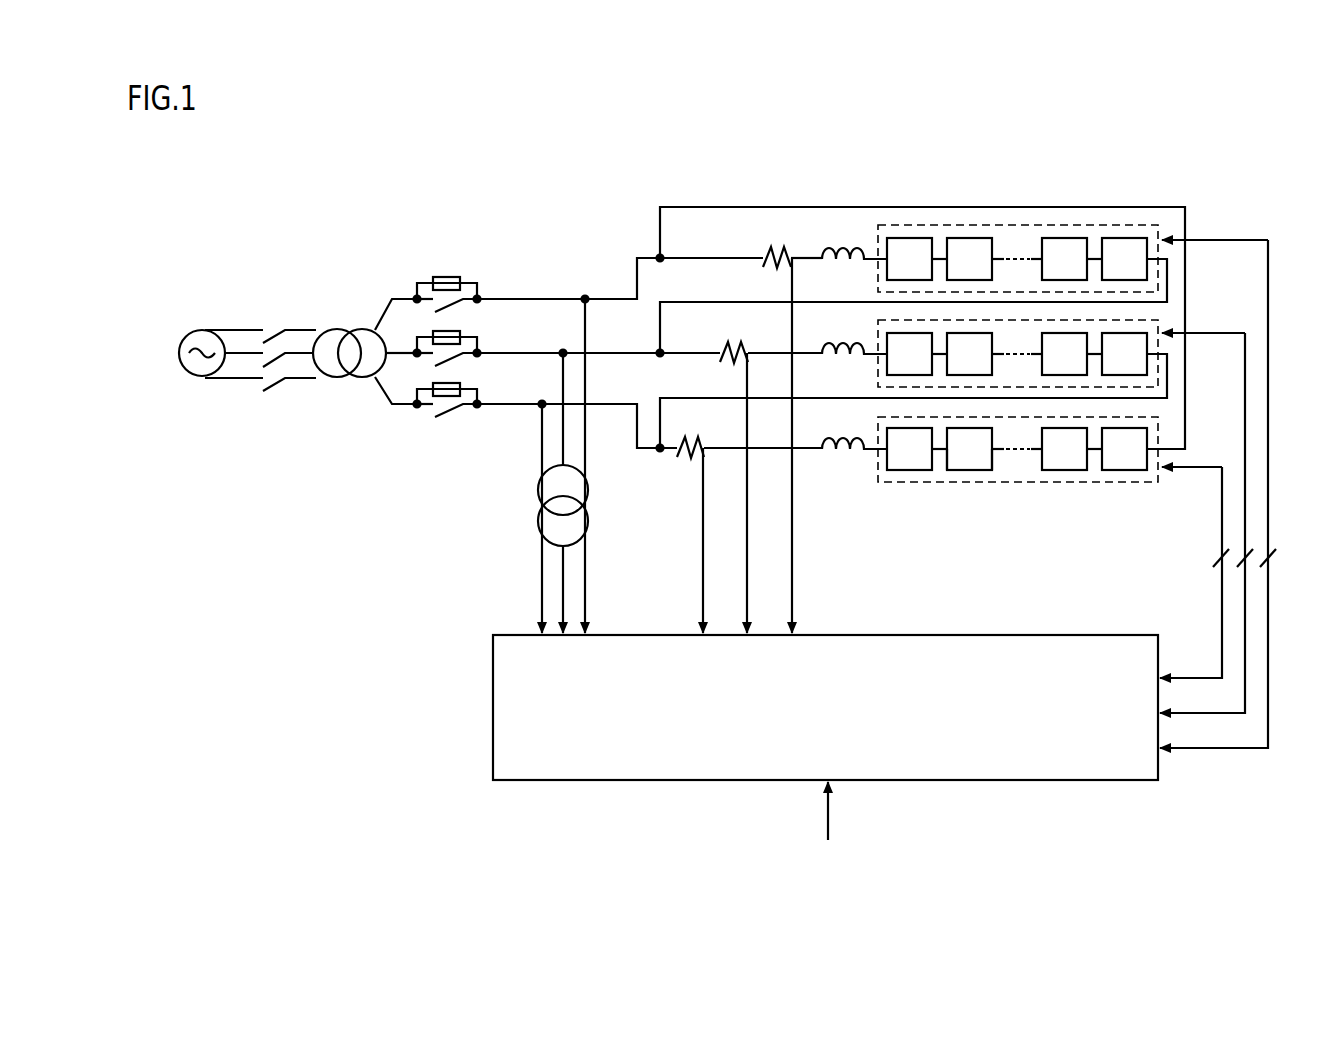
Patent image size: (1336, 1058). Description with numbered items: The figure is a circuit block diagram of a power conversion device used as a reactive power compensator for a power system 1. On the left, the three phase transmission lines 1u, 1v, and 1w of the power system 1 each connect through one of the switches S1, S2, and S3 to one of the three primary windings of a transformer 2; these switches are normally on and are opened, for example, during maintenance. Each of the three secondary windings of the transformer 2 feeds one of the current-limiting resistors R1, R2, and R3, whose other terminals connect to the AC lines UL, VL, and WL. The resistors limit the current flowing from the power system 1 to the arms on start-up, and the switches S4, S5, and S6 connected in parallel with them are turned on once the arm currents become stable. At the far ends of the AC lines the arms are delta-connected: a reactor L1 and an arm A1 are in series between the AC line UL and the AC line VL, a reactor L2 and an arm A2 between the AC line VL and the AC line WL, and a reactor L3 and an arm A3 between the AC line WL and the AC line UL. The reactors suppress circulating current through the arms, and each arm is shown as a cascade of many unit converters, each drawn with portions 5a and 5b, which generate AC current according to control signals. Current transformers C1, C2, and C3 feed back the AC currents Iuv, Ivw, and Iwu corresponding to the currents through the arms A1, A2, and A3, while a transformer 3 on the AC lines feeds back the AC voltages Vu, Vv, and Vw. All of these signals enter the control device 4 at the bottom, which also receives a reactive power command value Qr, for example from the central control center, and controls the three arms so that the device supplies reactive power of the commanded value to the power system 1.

The power system 1 is at (189, 328).
The phase transmission line 1u is at (236, 330).
The phase transmission line 1v is at (233, 355).
The phase transmission line 1w is at (250, 379).
The switch S1 is at (277, 327).
The switch S2 is at (278, 362).
The switch S3 is at (290, 383).
The transformer 2 is at (335, 382).
The current-limiting resistor R1 is at (445, 276).
The current-limiting resistor R2 is at (437, 329).
The current-limiting resistor R3 is at (435, 382).
The switch S4 is at (450, 305).
The switch S5 is at (450, 358).
The switch S6 is at (450, 410).
The AC line UL is at (607, 298).
The AC line VL is at (615, 352).
The AC line WL is at (622, 403).
The current transformer C1 is at (763, 253).
The current transformer C2 is at (719, 348).
The current transformer C3 is at (703, 438).
The reactor L1 is at (843, 248).
The reactor L2 is at (843, 347).
The reactor L3 is at (843, 442).
The arm A1 is at (1046, 258).
The arm A2 is at (1034, 355).
The arm A3 is at (1023, 472).
The cell part 5a is at (946, 456).
The cell part 5b is at (992, 456).
The transformer 3 is at (538, 492).
The control device 4 is at (493, 711).
The AC voltage Vv is at (562, 557).
The AC voltage Vw is at (541, 600).
The AC voltage Vu is at (588, 602).
The AC current Ivw is at (746, 517).
The AC current Iwu is at (704, 558).
The AC current Iuv is at (794, 560).
The reactive power command value Qr is at (828, 826).